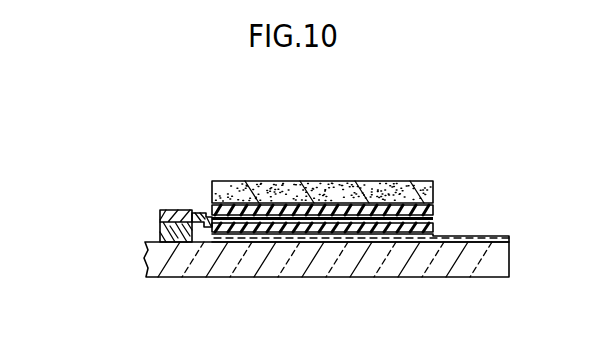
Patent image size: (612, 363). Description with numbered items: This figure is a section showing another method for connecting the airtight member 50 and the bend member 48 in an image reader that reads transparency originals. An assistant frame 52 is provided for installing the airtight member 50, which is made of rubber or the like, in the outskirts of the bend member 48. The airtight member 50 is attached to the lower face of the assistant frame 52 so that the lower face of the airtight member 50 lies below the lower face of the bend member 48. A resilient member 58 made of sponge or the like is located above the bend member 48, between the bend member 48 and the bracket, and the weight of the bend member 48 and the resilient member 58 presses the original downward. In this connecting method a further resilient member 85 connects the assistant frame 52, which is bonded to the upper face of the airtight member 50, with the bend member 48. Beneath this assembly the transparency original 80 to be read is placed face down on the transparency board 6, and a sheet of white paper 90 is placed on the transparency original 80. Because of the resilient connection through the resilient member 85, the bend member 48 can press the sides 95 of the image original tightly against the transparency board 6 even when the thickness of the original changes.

The transparency board 6 is at (455, 265).
The assistant frame 52 is at (160, 210).
The airtight member 50 is at (178, 243).
The resilient member 85 is at (200, 212).
The resilient member 58 is at (297, 187).
The sides of the image original 95 is at (220, 240).
The bend member 48 is at (250, 232).
The transparency original 80 is at (311, 243).
The sheet of white paper 90 is at (358, 242).